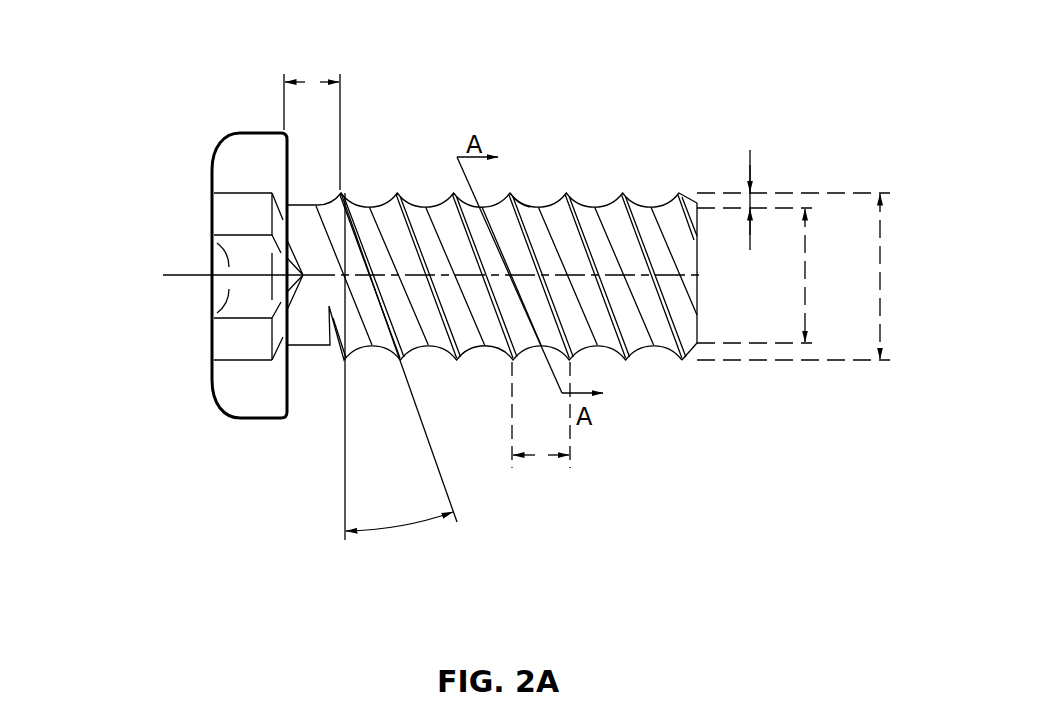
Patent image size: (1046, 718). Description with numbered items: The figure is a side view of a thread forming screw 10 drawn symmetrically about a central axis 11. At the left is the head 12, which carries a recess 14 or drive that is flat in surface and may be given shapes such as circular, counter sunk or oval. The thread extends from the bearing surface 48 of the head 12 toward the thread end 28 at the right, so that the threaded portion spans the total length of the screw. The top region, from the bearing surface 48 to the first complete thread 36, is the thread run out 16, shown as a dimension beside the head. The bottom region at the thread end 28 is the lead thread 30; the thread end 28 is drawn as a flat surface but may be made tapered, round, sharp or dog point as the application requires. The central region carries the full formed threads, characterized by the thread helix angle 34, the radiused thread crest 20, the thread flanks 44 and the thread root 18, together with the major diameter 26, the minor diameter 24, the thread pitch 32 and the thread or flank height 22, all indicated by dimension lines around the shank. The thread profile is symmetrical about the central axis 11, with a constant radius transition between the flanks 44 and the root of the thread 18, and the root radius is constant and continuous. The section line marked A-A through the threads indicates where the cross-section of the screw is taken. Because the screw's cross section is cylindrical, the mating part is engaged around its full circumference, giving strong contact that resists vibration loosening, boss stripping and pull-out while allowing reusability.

The thread forming screw 10 is at (242, 130).
The central axis 11 is at (164, 275).
The head 12 is at (243, 170).
The recess 14 is at (242, 341).
The thread run out 16 is at (313, 79).
The thread root 18 is at (441, 415).
The thread crest 20 is at (397, 189).
The flank height 22 is at (743, 192).
The minor diameter 24 is at (803, 263).
The major diameter 26 is at (878, 271).
The thread end 28 is at (703, 326).
The lead thread 30 is at (682, 368).
The thread pitch 32 is at (540, 459).
The thread helix angle 34 is at (405, 534).
The first complete thread 36 is at (342, 369).
The thread flanks 44 is at (519, 194).
The bearing surface 48 is at (291, 389).